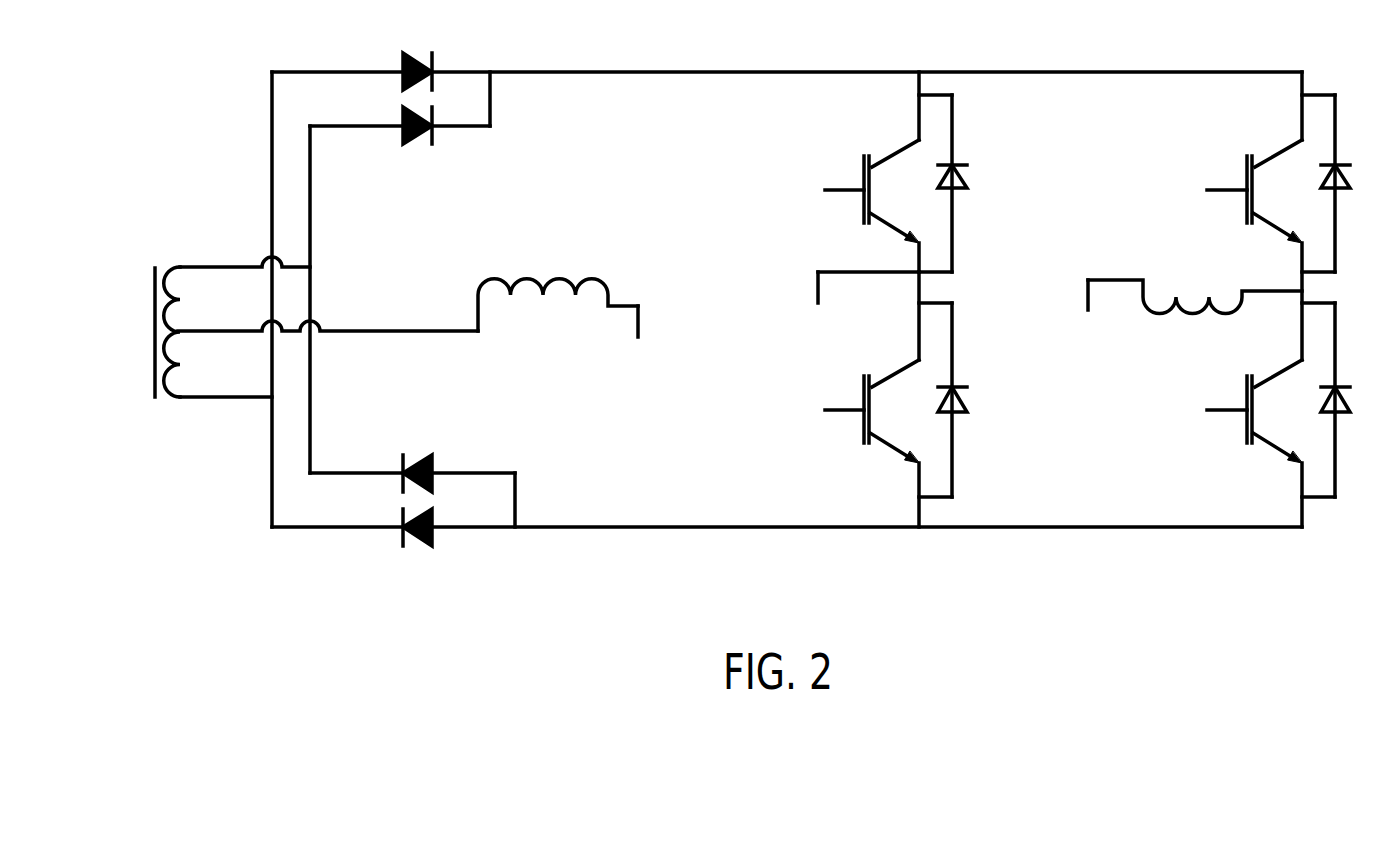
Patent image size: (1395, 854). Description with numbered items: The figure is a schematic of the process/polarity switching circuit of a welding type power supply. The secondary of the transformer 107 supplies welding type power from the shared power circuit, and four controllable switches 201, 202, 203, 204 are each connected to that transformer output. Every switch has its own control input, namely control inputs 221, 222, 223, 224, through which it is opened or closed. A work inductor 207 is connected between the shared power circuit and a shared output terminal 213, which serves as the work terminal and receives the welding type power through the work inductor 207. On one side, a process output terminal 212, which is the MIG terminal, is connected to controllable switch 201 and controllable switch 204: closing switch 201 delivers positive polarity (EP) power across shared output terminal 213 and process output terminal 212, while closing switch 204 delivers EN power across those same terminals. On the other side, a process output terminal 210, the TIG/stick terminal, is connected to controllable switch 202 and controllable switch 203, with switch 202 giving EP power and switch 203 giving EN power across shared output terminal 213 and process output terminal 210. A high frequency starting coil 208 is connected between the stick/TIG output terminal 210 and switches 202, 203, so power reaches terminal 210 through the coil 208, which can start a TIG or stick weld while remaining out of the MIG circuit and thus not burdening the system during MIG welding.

The transformer 107 is at (161, 398).
The controllable switch 201 is at (892, 152).
The controllable switch 202 is at (1275, 152).
The controllable switch 203 is at (1272, 448).
The controllable switch 204 is at (888, 448).
The work inductor 207 is at (528, 278).
The high frequency starting coil 208 is at (1194, 304).
The process output terminal 210 is at (1089, 312).
The process output terminal 212 is at (860, 304).
The shared output terminal 213 is at (638, 337).
The control input 221 is at (823, 192).
The control input 222 is at (1204, 192).
The control input 223 is at (1204, 413).
The control input 224 is at (823, 412).